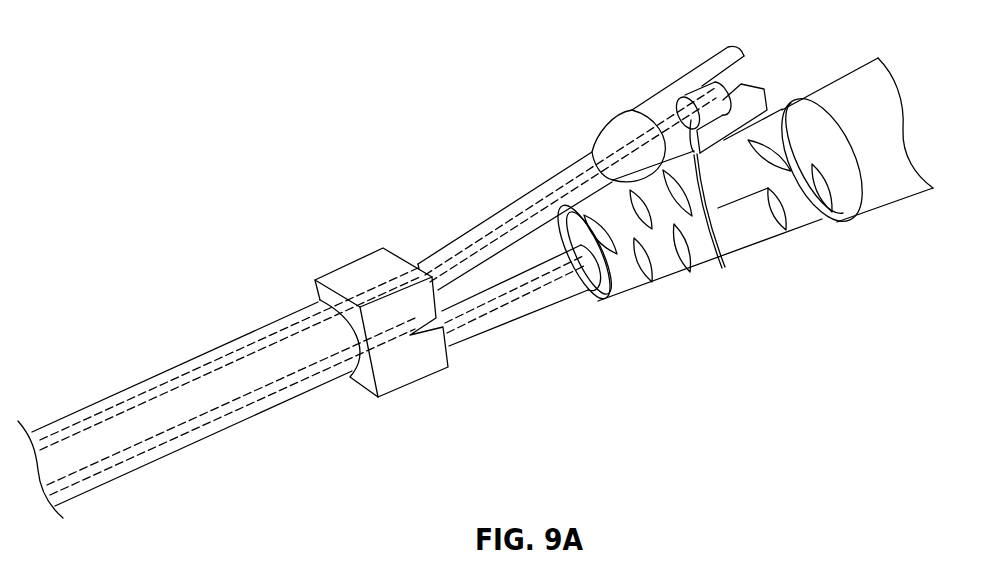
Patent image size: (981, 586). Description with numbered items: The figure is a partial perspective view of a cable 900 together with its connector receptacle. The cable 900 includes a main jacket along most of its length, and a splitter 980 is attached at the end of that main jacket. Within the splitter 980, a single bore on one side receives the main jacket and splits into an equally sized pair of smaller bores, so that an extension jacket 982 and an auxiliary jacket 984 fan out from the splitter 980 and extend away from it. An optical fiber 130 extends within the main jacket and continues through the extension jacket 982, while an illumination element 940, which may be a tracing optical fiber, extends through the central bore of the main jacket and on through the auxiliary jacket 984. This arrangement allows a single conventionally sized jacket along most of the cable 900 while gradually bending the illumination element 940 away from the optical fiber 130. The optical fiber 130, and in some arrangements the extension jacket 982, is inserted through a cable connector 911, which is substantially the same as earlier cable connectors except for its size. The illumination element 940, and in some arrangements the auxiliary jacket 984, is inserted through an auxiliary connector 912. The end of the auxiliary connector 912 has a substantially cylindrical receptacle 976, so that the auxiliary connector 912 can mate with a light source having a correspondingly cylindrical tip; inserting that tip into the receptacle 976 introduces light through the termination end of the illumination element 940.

The cable 900 is at (148, 103).
The illumination element 940 is at (88, 423).
The optical fiber 130 is at (133, 450).
The splitter 980 is at (400, 377).
The extension jacket 982 is at (498, 317).
The auxiliary jacket 984 is at (465, 242).
The cable connector 911 is at (738, 266).
The auxiliary connector 912 is at (646, 75).
The cylindrical receptacle 976 is at (748, 91).